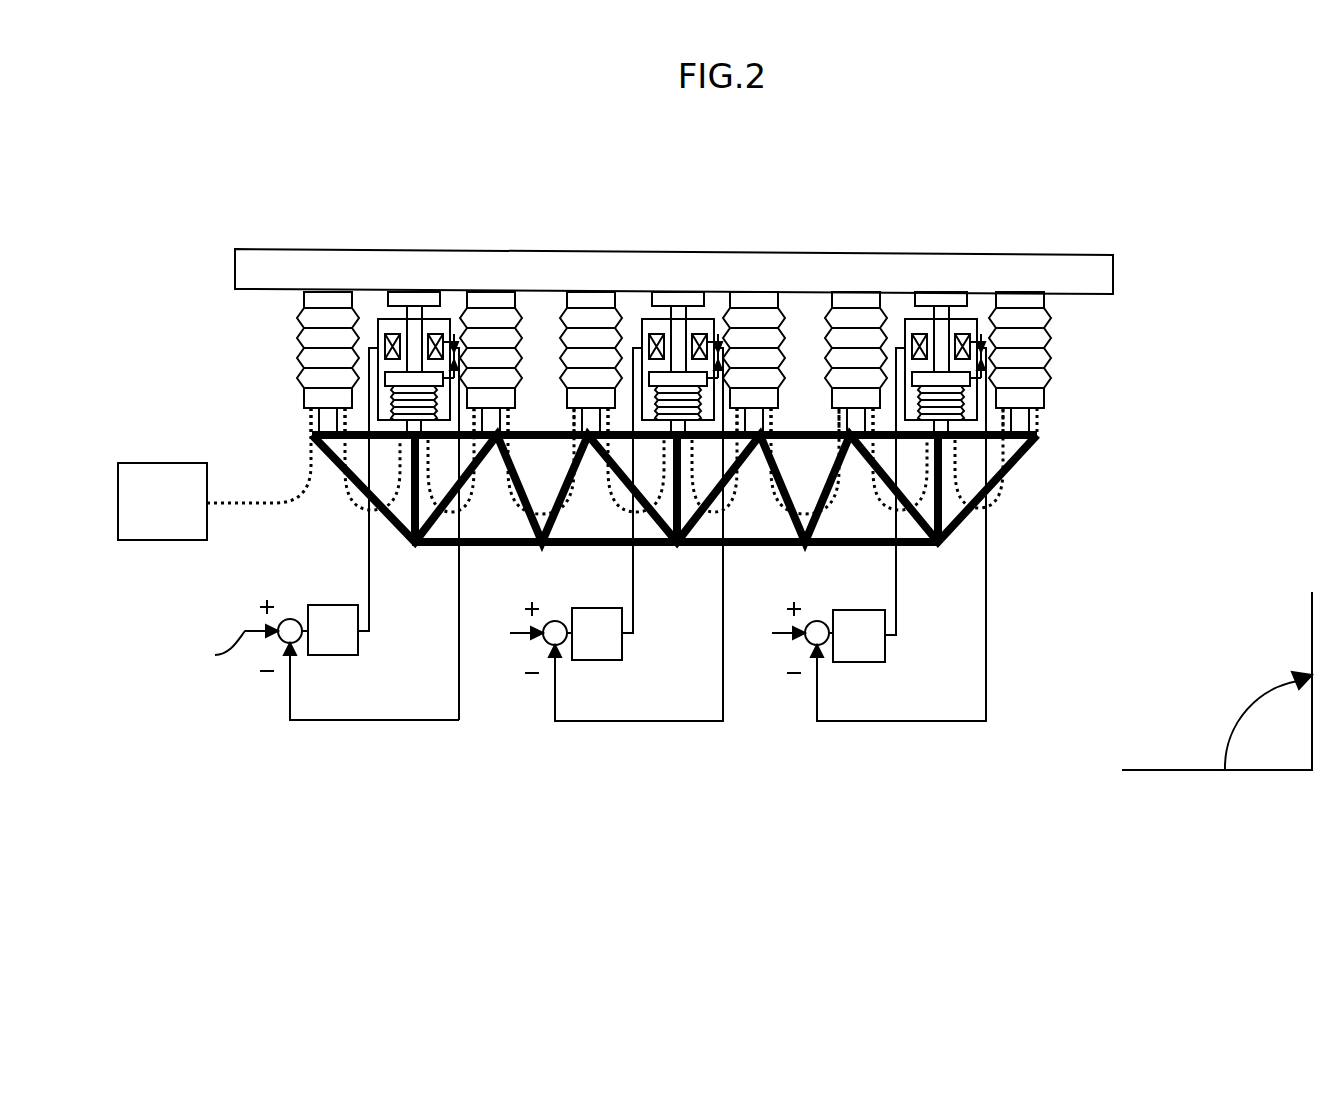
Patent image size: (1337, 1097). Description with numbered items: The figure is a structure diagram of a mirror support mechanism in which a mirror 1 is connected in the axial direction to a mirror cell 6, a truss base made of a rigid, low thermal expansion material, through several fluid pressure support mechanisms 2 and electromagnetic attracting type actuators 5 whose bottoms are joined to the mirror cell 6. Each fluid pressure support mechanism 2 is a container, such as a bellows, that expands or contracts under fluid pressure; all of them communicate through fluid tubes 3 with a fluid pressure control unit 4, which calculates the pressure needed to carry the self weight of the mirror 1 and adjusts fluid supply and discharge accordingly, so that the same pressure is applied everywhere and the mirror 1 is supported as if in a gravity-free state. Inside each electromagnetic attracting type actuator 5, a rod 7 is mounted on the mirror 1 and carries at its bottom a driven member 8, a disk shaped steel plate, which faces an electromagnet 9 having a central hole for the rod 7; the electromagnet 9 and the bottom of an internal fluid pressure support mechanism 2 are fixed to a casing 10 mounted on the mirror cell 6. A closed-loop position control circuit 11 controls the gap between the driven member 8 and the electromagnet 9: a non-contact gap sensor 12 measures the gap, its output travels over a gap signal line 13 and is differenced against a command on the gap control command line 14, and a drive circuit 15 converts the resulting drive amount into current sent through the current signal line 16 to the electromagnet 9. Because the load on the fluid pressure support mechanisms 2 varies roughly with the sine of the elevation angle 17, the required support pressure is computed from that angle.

The mirror 1 is at (458, 250).
The fluid pressure support mechanism 2 is at (383, 407).
The fluid tube 3 is at (1005, 497).
The fluid pressure control unit 4 is at (165, 463).
The electromagnetic attracting type actuator 5 is at (705, 286).
The mirror cell 6 is at (1037, 445).
The rod 7 is at (677, 297).
The driven member 8 is at (680, 318).
The electromagnet 9 is at (720, 340).
The casing 10 is at (385, 383).
The closed-loop position control circuit 11 is at (567, 631).
The non-contact gap sensor 12 is at (382, 335).
The gap signal line 13 is at (290, 705).
The gap control command line 14 is at (219, 648).
The drive circuit 15 is at (332, 645).
The current signal line 16 is at (368, 515).
The elevation angle 17 is at (1235, 725).